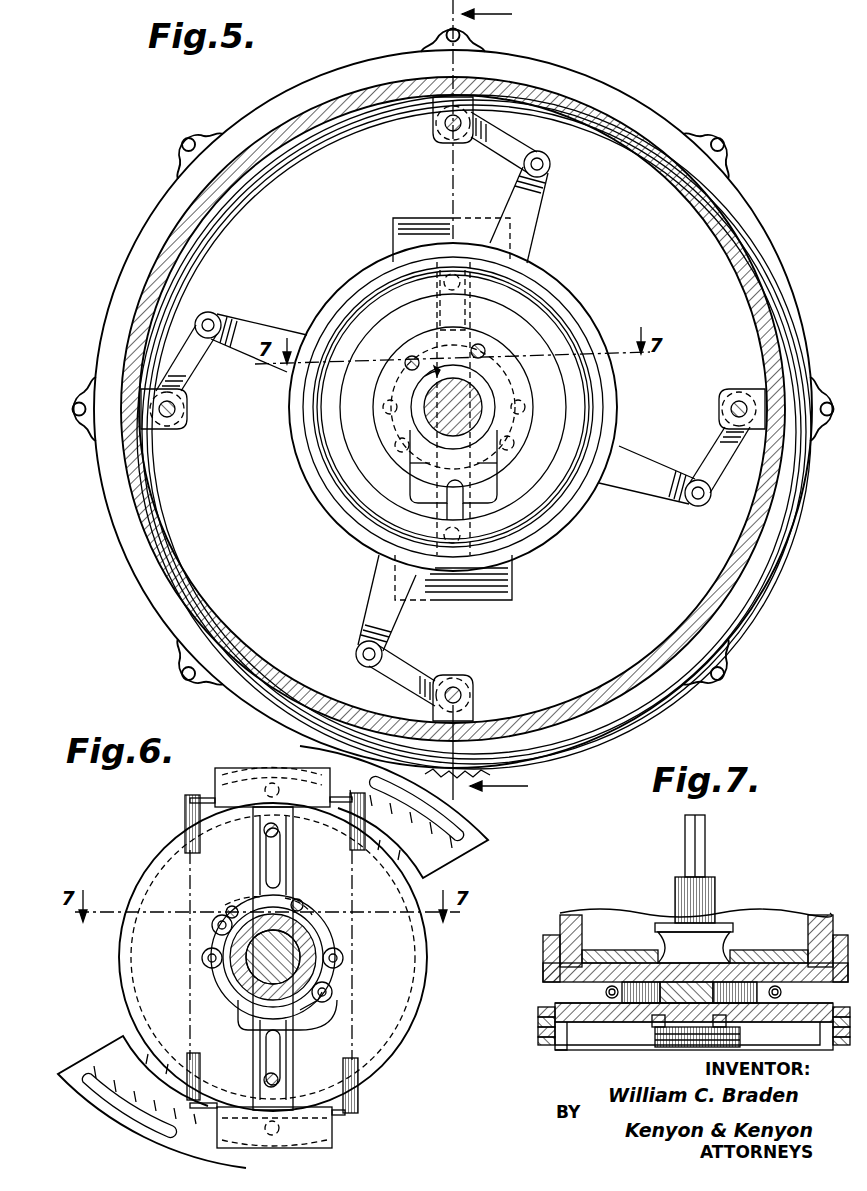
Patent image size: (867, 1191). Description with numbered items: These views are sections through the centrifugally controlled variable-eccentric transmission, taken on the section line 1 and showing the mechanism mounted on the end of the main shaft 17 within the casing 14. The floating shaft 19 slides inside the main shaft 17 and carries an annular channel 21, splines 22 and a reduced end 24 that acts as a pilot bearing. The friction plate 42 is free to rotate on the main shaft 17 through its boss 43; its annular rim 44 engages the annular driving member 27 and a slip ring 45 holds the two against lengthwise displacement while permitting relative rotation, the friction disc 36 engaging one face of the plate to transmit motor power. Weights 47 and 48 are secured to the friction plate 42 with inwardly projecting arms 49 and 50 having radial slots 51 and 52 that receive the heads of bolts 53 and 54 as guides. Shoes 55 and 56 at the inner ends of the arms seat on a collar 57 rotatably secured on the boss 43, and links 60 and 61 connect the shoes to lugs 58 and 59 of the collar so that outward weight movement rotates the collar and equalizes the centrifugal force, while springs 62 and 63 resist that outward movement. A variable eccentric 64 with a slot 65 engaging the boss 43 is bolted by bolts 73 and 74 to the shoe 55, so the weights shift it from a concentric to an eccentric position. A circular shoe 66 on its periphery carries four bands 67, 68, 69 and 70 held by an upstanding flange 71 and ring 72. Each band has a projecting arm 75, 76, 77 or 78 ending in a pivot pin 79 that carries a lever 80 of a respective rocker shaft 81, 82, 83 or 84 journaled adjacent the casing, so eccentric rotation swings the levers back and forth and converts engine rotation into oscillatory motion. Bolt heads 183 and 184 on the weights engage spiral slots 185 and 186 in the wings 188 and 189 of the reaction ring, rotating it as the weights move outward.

In FIG. 5, the section line 1- 1 is at (482, 400).
In FIG. 5, the casing 14 is at (165, 505).
In FIG. 5, the main shaft 17 is at (470, 395).
In FIG. 6, the main shaft 17 is at (256, 997).
In FIG. 5, the floating shaft 19 is at (443, 418).
In FIG. 6, the floating shaft 19 is at (243, 976).
In FIG. 7, the annular channel 21 is at (666, 938).
In FIG. 7, the splines 22 is at (678, 882).
In FIG. 7, the reduced end 24 is at (704, 838).
In FIG. 7, the annular driving member 27 is at (790, 926).
In FIG. 7, the friction disc 36 is at (750, 952).
In FIG. 5, the friction plate 42 is at (490, 478).
In FIG. 6, the friction plate 42 is at (273, 957).
In FIG. 7, the friction plate 42 is at (767, 975).
In FIG. 5, the boss 43 is at (425, 462).
In FIG. 6, the boss 43 is at (330, 946).
In FIG. 7, the boss 43 is at (690, 1047).
In FIG. 7, the annular rim 44 is at (558, 932).
In FIG. 7, the slip ring 45 is at (838, 938).
In FIG. 5, the weight 47 is at (436, 218).
In FIG. 6, the weight 47 is at (236, 780).
In FIG. 5, the weight 48 is at (500, 600).
In FIG. 6, the weight 48 is at (332, 1133).
In FIG. 6, the arm 49 is at (282, 856).
In FIG. 6, the arm 50 is at (292, 1067).
In FIG. 5, the radial slot 51 is at (441, 318).
In FIG. 6, the radial slot 51 is at (282, 866).
In FIG. 5, the radial slot 52 is at (452, 490).
In FIG. 6, the radial slot 52 is at (282, 1055).
In FIG. 6, the bolt 53 is at (264, 834).
In FIG. 6, the bolt 54 is at (264, 1081).
In FIG. 6, the shoe 55 is at (246, 898).
In FIG. 7, the shoe 55 is at (668, 990).
In FIG. 6, the shoe 56 is at (308, 1021).
In FIG. 6, the collar 57 is at (306, 932).
In FIG. 6, the lug 58 is at (204, 966).
In FIG. 6, the lug 59 is at (344, 956).
In FIG. 6, the link 60 is at (212, 936).
In FIG. 6, the link 61 is at (333, 991).
In FIG. 6, the spring 62 is at (185, 831).
In FIG. 7, the spring 62 is at (606, 993).
In FIG. 6, the spring 63 is at (358, 1097).
In FIG. 7, the spring 63 is at (782, 993).
In FIG. 5, the variable eccentric 64 is at (525, 490).
In FIG. 7, the variable eccentric 64 is at (612, 1022).
In FIG. 5, the slot 65 is at (500, 457).
In FIG. 5, the circular shoe 66 is at (575, 302).
In FIG. 7, the circular shoe 66 is at (572, 1046).
In FIG. 7, the band 67 is at (540, 1010).
In FIG. 7, the band 68 is at (538, 1020).
In FIG. 7, the band 69 is at (538, 1031).
In FIG. 5, the band 70 is at (312, 468).
In FIG. 7, the band 70 is at (538, 1042).
In FIG. 7, the upstanding flange 71 is at (560, 1005).
In FIG. 5, the ring 72 is at (600, 326).
In FIG. 7, the ring 72 is at (556, 1048).
In FIG. 5, the bolt 73 is at (482, 347).
In FIG. 6, the bolt 73 is at (302, 903).
In FIG. 7, the bolt 73 is at (726, 1027).
In FIG. 5, the bolt 74 is at (408, 360).
In FIG. 6, the bolt 74 is at (228, 908).
In FIG. 7, the bolt 74 is at (656, 1028).
In FIG. 5, the projecting arm 75 is at (655, 498).
In FIG. 5, the projecting arm 76 is at (266, 326).
In FIG. 5, the projecting arm 77 is at (538, 212).
In FIG. 5, the projecting arm 78 is at (376, 591).
In FIG. 5, the pivot pin 79 is at (551, 165).
In FIG. 5, the lever 80 is at (498, 160).
In FIG. 5, the rocker shaft 81 is at (735, 398).
In FIG. 5, the rocker shaft 82 is at (190, 428).
In FIG. 5, the rocker shaft 83 is at (440, 123).
In FIG. 5, the rocker shaft 84 is at (472, 692).
In FIG. 6, the bolt head 183 is at (272, 785).
In FIG. 6, the bolt head 184 is at (274, 1140).
In FIG. 6, the slot 185 is at (455, 825).
In FIG. 6, the slot 186 is at (128, 1112).
In FIG. 6, the wing 188 is at (448, 858).
In FIG. 6, the wing 189 is at (126, 1052).